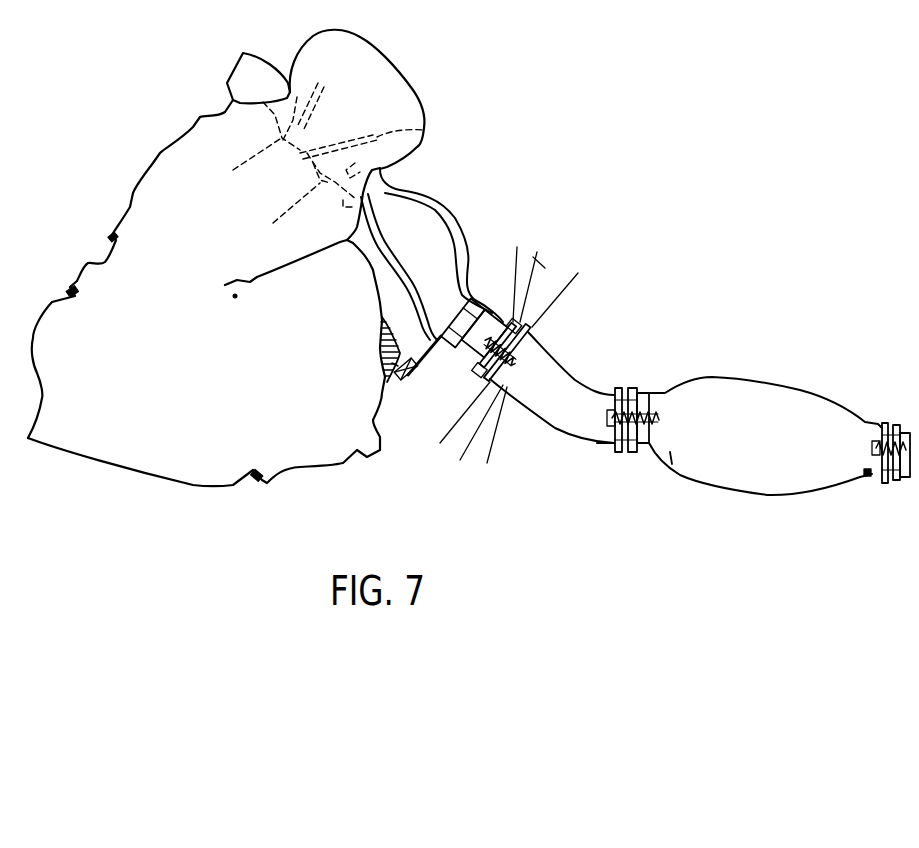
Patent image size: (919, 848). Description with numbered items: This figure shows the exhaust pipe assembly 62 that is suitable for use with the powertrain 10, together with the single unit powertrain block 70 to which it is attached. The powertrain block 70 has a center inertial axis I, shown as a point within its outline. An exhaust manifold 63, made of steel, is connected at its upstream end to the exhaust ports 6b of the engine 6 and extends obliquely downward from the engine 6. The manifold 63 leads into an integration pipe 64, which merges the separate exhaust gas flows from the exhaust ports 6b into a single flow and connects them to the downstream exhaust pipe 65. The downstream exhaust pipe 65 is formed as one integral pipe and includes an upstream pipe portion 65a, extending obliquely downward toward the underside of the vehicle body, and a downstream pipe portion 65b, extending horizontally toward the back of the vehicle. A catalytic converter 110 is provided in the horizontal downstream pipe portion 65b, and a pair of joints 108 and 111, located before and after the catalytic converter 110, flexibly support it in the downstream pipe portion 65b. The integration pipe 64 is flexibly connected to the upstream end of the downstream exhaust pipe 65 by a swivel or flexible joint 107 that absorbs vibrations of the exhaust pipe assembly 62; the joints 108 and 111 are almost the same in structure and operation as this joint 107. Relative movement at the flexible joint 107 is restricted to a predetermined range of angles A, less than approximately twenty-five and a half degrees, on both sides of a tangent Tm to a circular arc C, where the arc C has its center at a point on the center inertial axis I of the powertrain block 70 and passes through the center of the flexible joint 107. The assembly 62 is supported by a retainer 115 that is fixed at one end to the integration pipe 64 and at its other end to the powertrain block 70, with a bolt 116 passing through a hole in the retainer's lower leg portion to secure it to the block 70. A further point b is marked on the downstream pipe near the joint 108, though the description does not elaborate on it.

The engine 6 is at (406, 80).
The exhaust ports 6b is at (423, 131).
The powertrain 10 is at (106, 240).
The single unit powertrain block 70 is at (192, 401).
The center inertial axis I is at (235, 298).
The exhaust manifold 63 is at (433, 230).
The integration pipe 64 is at (463, 311).
The exhaust pipe assembly 62 is at (553, 322).
The flexible joint 107 is at (529, 340).
The circular arc C is at (517, 257).
The tangent Tm is at (537, 257).
The range of angles A is at (509, 360).
The retainer 115 is at (408, 376).
The bolt 116 is at (410, 378).
The downstream exhaust pipe 65 is at (696, 424).
The upstream pipe portion 65a is at (557, 407).
The downstream pipe portion 65b is at (597, 443).
The joint 108 is at (612, 462).
The catalytic converter 110 is at (778, 410).
The joint 111 is at (891, 400).
The point b is at (672, 463).